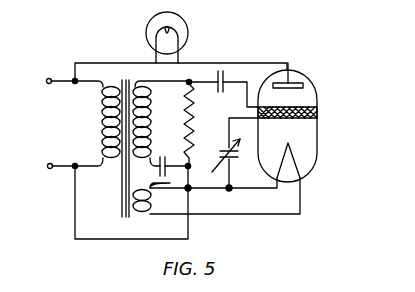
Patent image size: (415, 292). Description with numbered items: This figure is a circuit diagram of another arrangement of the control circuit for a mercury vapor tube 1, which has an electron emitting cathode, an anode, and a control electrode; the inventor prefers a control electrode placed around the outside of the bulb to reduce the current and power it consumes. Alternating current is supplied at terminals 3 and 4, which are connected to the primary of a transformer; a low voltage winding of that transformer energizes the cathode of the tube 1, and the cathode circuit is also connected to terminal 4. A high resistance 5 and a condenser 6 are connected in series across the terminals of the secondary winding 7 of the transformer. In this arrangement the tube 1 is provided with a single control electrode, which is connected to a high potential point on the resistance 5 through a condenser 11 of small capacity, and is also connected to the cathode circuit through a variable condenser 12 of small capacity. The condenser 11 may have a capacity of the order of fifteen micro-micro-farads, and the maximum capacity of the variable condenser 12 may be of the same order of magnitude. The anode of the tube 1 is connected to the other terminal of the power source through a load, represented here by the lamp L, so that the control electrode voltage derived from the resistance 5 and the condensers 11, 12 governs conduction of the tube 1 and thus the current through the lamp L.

The mercury vapor tube 1 is at (310, 87).
The terminal 3 is at (51, 83).
The terminal 4 is at (52, 168).
The high resistance 5 is at (198, 93).
The condenser 6 is at (156, 169).
The secondary winding 7 is at (151, 112).
The condenser 11 is at (226, 75).
The variable condenser 12 is at (232, 160).
The lamp L is at (187, 22).